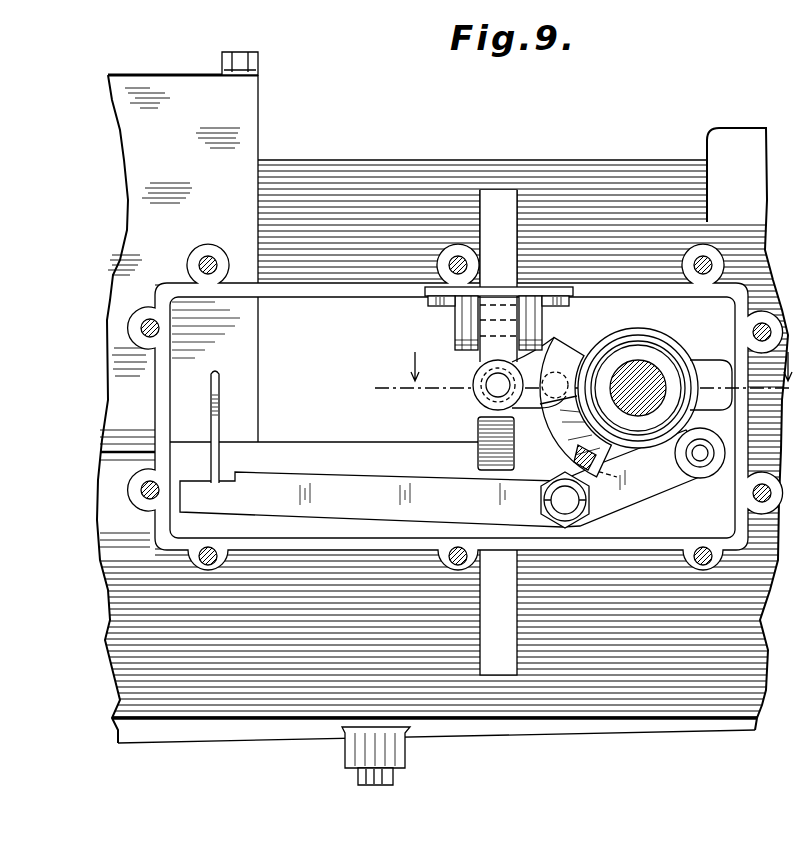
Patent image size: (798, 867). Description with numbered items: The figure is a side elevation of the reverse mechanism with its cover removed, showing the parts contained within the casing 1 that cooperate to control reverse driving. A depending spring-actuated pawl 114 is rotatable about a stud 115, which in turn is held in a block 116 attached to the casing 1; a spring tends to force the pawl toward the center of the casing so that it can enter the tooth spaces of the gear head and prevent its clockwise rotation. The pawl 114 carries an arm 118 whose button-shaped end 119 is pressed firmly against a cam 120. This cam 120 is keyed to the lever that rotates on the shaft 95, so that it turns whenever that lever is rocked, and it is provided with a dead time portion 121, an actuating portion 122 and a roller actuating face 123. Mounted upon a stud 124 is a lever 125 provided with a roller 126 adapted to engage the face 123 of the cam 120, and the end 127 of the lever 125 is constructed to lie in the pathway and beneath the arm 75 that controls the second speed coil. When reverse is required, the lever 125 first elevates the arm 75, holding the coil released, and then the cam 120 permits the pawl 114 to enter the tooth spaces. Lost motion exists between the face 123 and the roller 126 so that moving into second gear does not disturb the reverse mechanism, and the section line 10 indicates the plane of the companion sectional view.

The casing 1 is at (123, 592).
The section line 10- 10 is at (583, 378).
The arm 75 is at (219, 407).
The shaft 95 is at (646, 376).
The pawl 114 is at (490, 455).
The stud 115 is at (455, 330).
The block 116 is at (548, 287).
The arm 118 is at (522, 388).
The button-shaped end 119 is at (560, 374).
The cam 120 is at (556, 378).
The dead time portion 121 is at (563, 428).
The actuating portion 122 is at (578, 455).
The roller actuating face 123 is at (708, 372).
The stud 124 is at (570, 501).
The lever 125 is at (444, 478).
The roller 126 is at (706, 462).
The end 127 is at (205, 492).